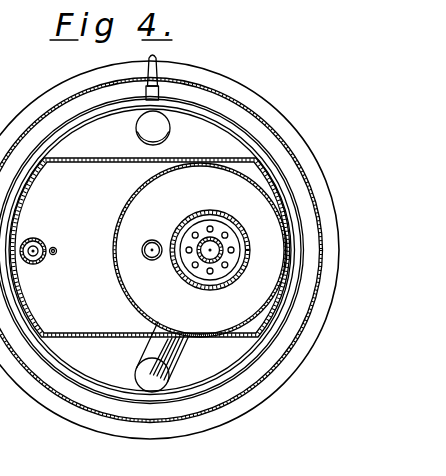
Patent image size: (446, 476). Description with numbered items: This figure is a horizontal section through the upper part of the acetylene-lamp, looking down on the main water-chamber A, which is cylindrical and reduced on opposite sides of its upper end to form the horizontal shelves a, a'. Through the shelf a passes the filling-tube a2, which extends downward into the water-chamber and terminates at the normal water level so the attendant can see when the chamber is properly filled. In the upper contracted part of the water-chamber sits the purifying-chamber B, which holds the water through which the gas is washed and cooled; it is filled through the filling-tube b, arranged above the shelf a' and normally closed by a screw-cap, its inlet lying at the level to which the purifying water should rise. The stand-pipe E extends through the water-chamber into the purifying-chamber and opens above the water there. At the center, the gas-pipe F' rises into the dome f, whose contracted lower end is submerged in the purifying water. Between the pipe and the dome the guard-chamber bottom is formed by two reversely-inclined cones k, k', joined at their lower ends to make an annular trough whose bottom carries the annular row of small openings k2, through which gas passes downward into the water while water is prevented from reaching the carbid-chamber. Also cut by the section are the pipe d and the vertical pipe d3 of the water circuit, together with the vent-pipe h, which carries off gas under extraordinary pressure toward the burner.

The horizontal shelf a is at (152, 250).
The horizontal shelf a' is at (161, 250).
The filling-tube a2 is at (171, 128).
The main water-chamber A is at (36, 329).
The purifying-chamber B is at (200, 250).
The stand-pipe E is at (142, 250).
The hub F' is at (209, 265).
The reversely-inclined cone k is at (202, 273).
The reversely-inclined cone k' is at (193, 258).
The small openings k2 is at (234, 266).
The dome f is at (215, 272).
The pipe d is at (58, 251).
The vertical pipe d3 is at (38, 240).
The vent-pipe h is at (33, 264).
The filling-tube b is at (179, 353).